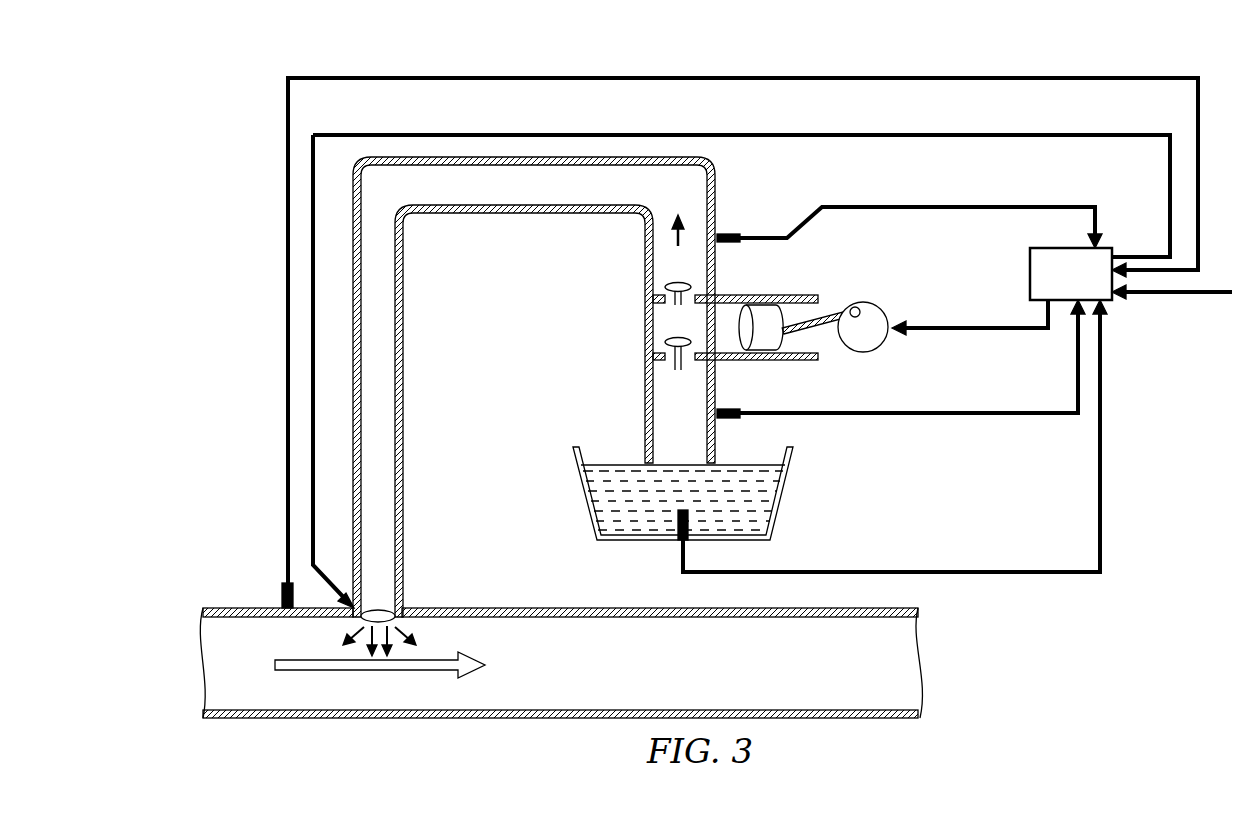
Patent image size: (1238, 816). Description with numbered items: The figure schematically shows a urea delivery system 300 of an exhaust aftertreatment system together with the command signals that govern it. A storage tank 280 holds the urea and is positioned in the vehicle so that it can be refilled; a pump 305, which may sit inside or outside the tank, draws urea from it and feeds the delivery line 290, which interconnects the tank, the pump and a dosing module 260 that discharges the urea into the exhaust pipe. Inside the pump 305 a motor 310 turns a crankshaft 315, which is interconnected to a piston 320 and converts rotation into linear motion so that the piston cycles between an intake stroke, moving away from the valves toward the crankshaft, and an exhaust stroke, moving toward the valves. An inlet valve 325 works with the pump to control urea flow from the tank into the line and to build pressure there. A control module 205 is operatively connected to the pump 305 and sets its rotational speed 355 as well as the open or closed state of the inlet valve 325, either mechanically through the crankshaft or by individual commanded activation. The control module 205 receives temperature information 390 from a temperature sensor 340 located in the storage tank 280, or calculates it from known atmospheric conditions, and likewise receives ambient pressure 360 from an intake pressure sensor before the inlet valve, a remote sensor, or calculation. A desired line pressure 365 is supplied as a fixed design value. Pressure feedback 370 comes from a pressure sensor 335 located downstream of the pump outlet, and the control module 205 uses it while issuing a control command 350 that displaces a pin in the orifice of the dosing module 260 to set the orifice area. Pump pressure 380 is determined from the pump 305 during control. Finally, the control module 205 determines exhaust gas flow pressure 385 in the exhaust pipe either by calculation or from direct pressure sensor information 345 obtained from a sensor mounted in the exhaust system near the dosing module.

The urea delivery system 300 is at (687, 70).
The exhaust gas (flow) pressure 385 is at (787, 76).
The control command 350 is at (825, 130).
The delivery line 290 is at (403, 308).
The dosing module 260 is at (391, 609).
The pressure sensor information 345 is at (282, 593).
The pressure sensor 335 is at (738, 234).
The pressure feedback 370 is at (890, 204).
The pump pressure 380 is at (663, 330).
The pump 305 is at (807, 281).
The piston 320 is at (766, 350).
The crankshaft 315 is at (822, 309).
The motor 310 is at (866, 352).
The pump rotational speed 355 is at (960, 320).
The inlet valve 325 is at (745, 420).
The ambient pressure 360 is at (1007, 407).
The storage tank 280 is at (783, 500).
The temperature sensor 340 is at (678, 526).
The temperature information 390 is at (912, 561).
The control module 205 is at (1056, 287).
The desired line pressure 365 is at (1155, 316).